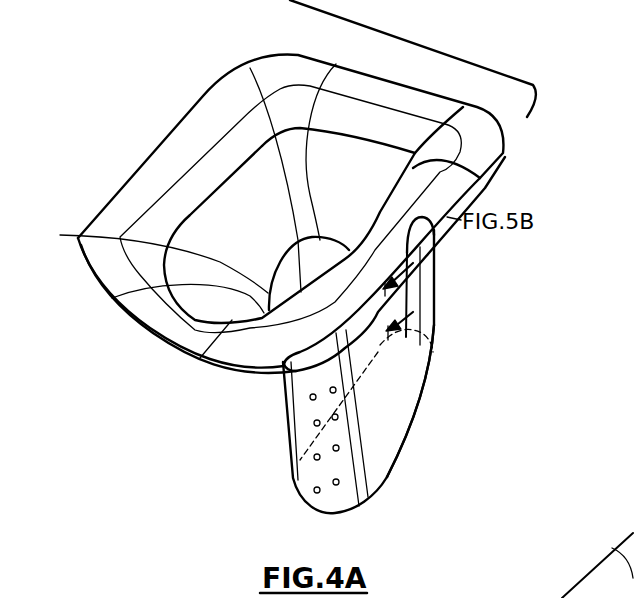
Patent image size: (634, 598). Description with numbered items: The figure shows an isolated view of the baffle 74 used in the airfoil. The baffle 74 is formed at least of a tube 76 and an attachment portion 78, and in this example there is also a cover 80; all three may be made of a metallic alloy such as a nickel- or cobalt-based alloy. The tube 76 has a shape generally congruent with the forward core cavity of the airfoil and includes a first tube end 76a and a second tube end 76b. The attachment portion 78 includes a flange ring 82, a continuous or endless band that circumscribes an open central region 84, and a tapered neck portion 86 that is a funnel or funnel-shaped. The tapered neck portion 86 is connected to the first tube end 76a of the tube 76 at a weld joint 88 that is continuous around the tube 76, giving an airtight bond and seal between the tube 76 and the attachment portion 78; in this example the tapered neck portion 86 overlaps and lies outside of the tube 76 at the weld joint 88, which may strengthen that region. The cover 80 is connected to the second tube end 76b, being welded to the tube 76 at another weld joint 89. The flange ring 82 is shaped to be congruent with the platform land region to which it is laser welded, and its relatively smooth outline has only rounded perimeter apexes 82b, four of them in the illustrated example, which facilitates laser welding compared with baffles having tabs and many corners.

The baffle 74 is at (164, 429).
The tube 76 is at (463, 237).
The first tube end 76a is at (313, 379).
The second tube end 76b is at (383, 478).
The attachment portion 78 is at (421, 45).
The cover 80 is at (380, 428).
The flange ring 82 is at (106, 271).
The rounded perimeter apexes 82b is at (266, 56).
The open central region 84 is at (289, 293).
The tapered neck portion 86 is at (357, 168).
The weld joint 88 is at (405, 291).
The weld joint 89 is at (403, 352).